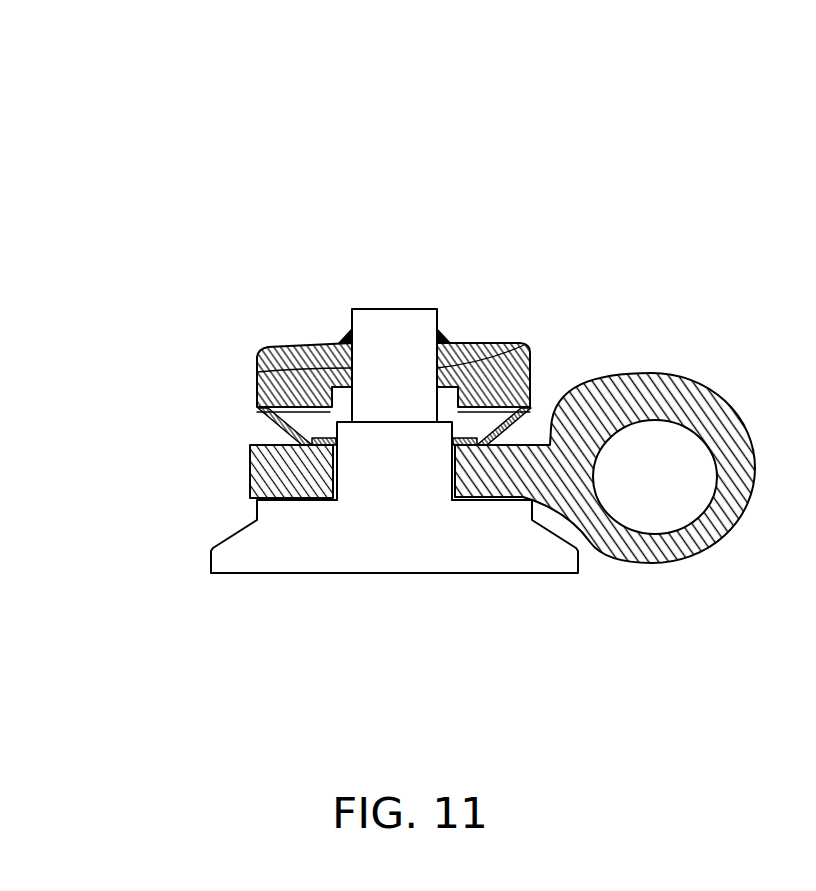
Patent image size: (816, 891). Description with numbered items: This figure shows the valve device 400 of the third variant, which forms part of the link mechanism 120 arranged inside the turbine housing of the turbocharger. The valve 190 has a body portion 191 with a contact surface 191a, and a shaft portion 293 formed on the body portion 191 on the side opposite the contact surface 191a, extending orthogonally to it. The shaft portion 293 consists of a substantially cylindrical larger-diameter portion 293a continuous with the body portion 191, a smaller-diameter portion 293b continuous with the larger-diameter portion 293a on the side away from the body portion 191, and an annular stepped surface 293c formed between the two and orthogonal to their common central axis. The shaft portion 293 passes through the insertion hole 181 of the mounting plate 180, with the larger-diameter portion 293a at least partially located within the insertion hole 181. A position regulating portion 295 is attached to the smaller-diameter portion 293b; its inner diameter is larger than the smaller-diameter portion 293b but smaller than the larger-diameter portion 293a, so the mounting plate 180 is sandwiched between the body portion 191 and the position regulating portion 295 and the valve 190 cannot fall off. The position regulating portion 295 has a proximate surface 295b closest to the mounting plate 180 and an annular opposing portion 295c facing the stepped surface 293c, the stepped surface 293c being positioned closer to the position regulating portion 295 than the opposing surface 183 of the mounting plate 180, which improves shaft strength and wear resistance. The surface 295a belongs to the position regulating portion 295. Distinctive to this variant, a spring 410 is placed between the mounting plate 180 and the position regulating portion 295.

The valve device 400 is at (115, 108).
The link mechanism 120 is at (182, 190).
The valve 190 is at (358, 287).
The shaft portion 293 is at (417, 476).
The larger-diameter portion 293a is at (562, 518).
The smaller-diameter portion 293b is at (492, 347).
The stepped surface 293c is at (443, 417).
The position regulating portion 295 is at (257, 357).
The upper portion of retaining member 295a is at (355, 370).
The proximate surface 295b is at (336, 392).
The opposing portion 295c is at (262, 419).
The spring 410 is at (502, 432).
The opposing surface 183 is at (292, 438).
The mounting plate 180 is at (251, 467).
The insertion hole 181 is at (336, 488).
The body portion 191 is at (218, 543).
The contact surface 191a is at (250, 574).